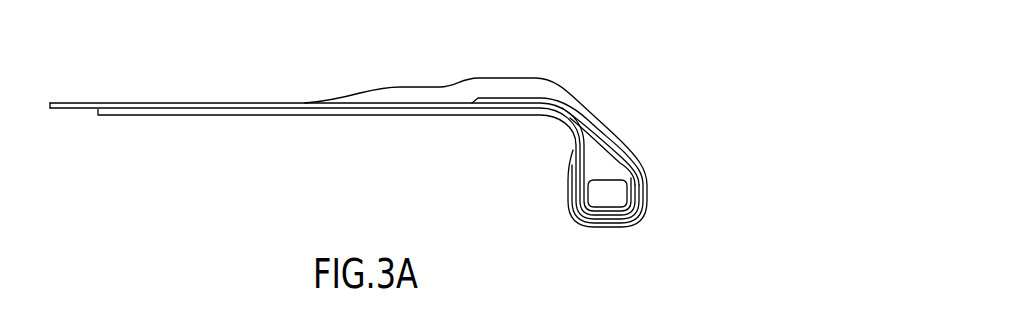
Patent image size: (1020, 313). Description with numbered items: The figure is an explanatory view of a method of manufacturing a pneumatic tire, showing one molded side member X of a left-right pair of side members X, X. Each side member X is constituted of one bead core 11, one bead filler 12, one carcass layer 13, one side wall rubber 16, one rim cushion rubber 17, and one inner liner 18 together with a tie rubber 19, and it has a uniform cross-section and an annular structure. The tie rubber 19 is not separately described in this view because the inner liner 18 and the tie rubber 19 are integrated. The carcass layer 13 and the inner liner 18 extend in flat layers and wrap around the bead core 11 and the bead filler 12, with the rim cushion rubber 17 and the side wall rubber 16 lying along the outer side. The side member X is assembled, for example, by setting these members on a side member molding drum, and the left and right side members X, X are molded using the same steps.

The bead core 11 is at (618, 186).
The bead filler 12 is at (620, 172).
The carcass layer 13 is at (152, 102).
The side wall rubber 16 is at (501, 78).
The rim cushion rubber 17 is at (634, 207).
The inner liner 18 is at (368, 165).
The tie rubber 19 is at (288, 115).
The side member X is at (572, 60).